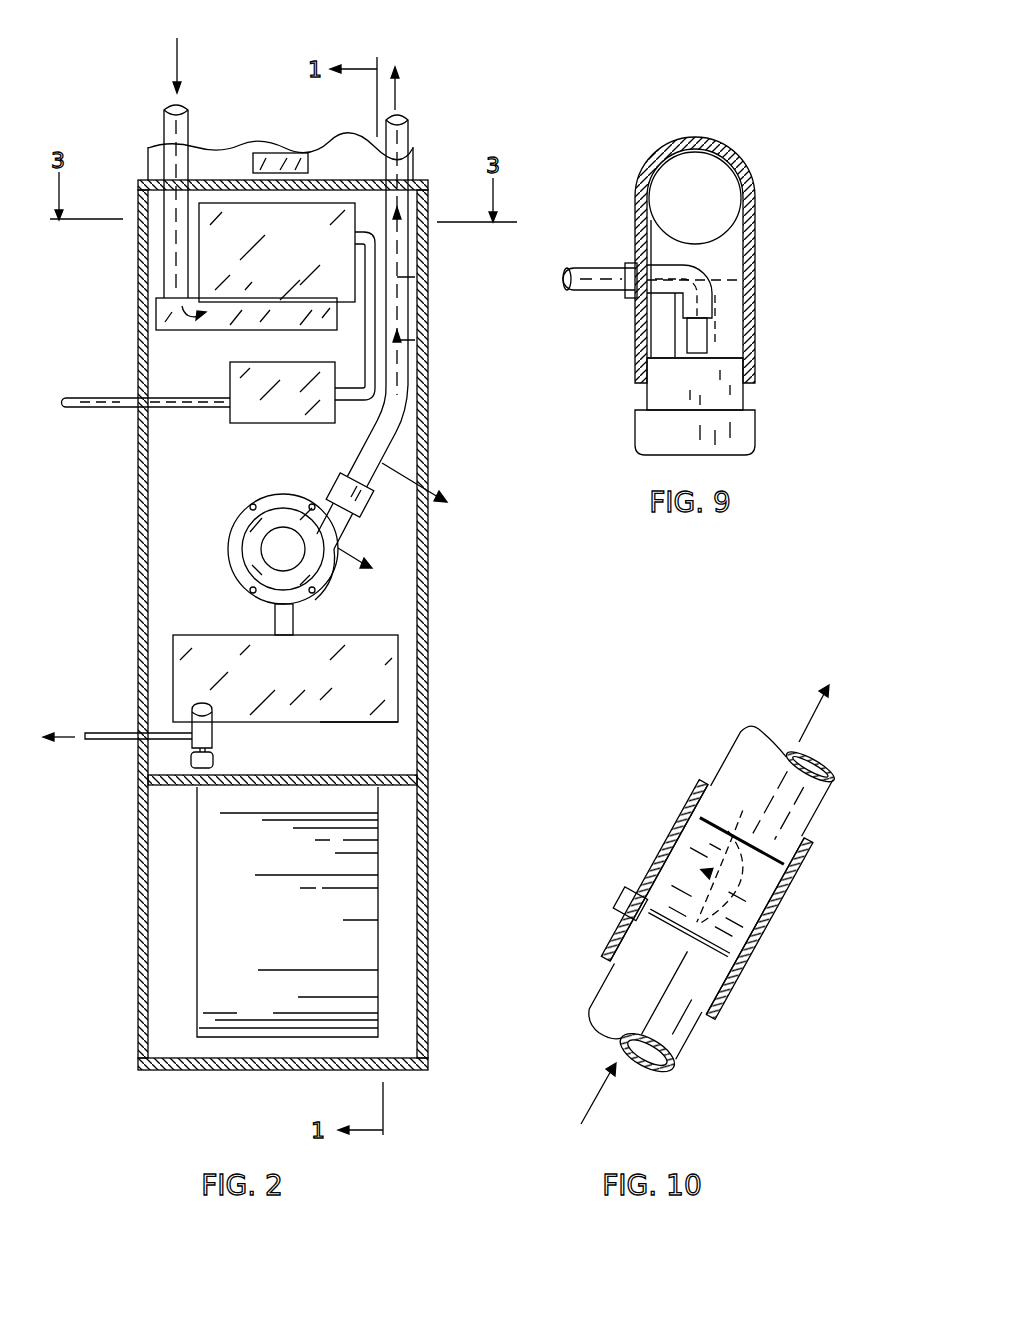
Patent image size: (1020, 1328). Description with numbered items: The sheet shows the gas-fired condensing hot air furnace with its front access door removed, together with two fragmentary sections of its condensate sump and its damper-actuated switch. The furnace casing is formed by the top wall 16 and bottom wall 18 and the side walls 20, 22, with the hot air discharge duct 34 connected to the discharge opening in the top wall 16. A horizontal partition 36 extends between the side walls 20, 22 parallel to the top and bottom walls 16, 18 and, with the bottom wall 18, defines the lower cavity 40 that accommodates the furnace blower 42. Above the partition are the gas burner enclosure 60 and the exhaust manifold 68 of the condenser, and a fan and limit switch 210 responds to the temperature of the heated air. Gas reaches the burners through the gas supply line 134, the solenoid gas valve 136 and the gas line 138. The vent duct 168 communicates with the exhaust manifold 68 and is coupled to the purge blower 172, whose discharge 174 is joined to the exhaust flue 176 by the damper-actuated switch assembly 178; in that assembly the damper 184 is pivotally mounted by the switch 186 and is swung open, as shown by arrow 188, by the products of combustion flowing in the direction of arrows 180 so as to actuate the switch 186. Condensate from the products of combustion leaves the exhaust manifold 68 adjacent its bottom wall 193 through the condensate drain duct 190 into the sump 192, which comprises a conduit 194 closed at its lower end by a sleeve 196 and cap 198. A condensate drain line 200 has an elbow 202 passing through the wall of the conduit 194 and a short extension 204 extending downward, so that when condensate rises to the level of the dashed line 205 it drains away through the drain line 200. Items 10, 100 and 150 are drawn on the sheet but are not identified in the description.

In FIG. 2, the gas sampling system 10 is at (407, 525).
In FIG. 2, the top wall 16 is at (232, 181).
In FIG. 2, the bottom wall 18 is at (275, 1070).
In FIG. 2, the side wall 20 is at (426, 455).
In FIG. 2, the side wall 22 is at (138, 506).
In FIG. 2, the hot air discharge duct 34 is at (238, 157).
In FIG. 2, the horizontal partition 36 is at (380, 787).
In FIG. 2, the lower cavity 40 is at (383, 918).
In FIG. 2, the furnace blower 42 is at (265, 944).
In FIG. 2, the gas burner enclosure 60 is at (261, 239).
In FIG. 2, the exhaust manifold 68 is at (398, 668).
In FIG. 2, the manifold 100 is at (220, 330).
In FIG. 2, the gas supply line 134 is at (197, 408).
In FIG. 2, the solenoid gas valve 136 is at (288, 424).
In FIG. 2, the gas line 138 is at (356, 402).
In FIG. 2, the flow path 150 is at (177, 48).
In FIG. 2, the vent duct 168 is at (275, 620).
In FIG. 2, the purge blower 172 is at (250, 544).
In FIG. 2, the discharge 174 is at (348, 534).
In FIG. 10, the discharge 174 is at (657, 993).
In FIG. 2, the exhaust flue 176 is at (408, 137).
In FIG. 10, the exhaust flue 176 is at (727, 772).
In FIG. 2, the damper-actuated switch assembly 178 is at (345, 494).
In FIG. 10, the damper-actuated switch assembly 178 is at (707, 900).
In FIG. 2, the arrows 180 is at (398, 78).
In FIG. 10, the arrows 180 is at (822, 710).
In FIG. 10, the damper 184 is at (715, 889).
In FIG. 10, the switch 186 is at (630, 904).
In FIG. 10, the arrow 188 is at (727, 870).
In FIG. 9, the condensate drain duct 190 is at (757, 147).
In FIG. 2, the sump 192 is at (215, 745).
In FIG. 9, the sump 192 is at (705, 287).
In FIG. 2, the bottom wall 193 is at (325, 722).
In FIG. 9, the conduit 194 is at (755, 312).
In FIG. 9, the sleeve 196 is at (743, 398).
In FIG. 9, the cap 198 is at (755, 438).
In FIG. 2, the condensate drain line 200 is at (126, 740).
In FIG. 9, the condensate drain line 200 is at (615, 292).
In FIG. 9, the elbow 202 is at (677, 295).
In FIG. 9, the short extension 204 is at (707, 342).
In FIG. 9, the dashed line 205 is at (725, 272).
In FIG. 2, the fan and limit switch 210 is at (308, 163).